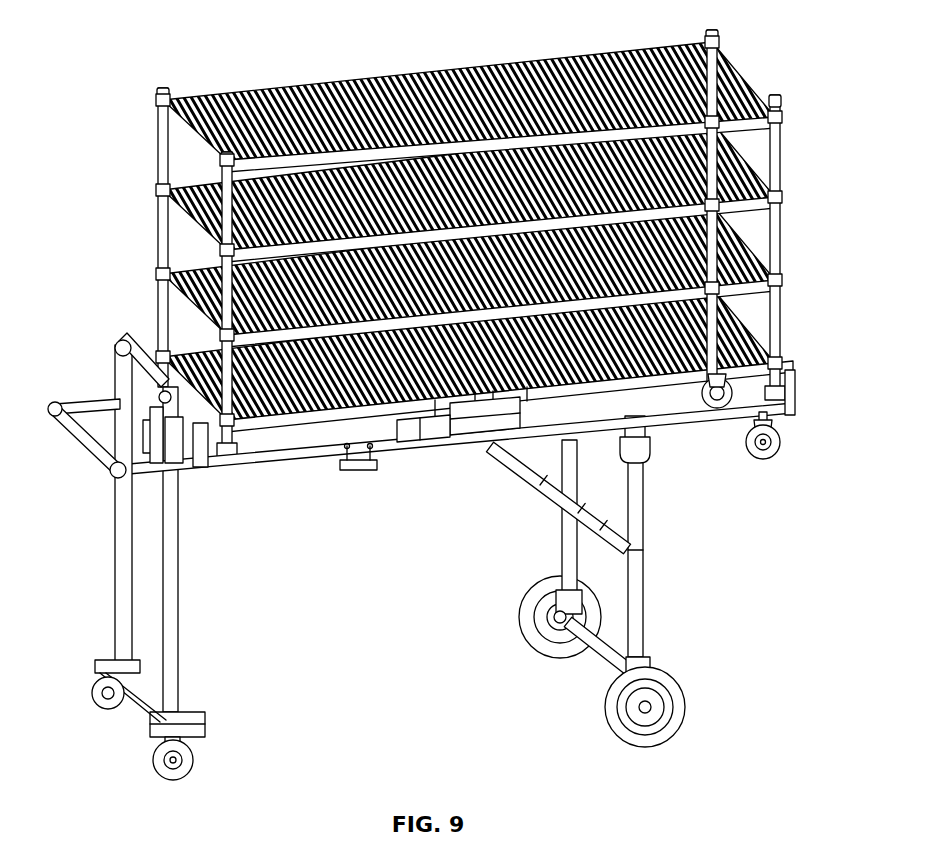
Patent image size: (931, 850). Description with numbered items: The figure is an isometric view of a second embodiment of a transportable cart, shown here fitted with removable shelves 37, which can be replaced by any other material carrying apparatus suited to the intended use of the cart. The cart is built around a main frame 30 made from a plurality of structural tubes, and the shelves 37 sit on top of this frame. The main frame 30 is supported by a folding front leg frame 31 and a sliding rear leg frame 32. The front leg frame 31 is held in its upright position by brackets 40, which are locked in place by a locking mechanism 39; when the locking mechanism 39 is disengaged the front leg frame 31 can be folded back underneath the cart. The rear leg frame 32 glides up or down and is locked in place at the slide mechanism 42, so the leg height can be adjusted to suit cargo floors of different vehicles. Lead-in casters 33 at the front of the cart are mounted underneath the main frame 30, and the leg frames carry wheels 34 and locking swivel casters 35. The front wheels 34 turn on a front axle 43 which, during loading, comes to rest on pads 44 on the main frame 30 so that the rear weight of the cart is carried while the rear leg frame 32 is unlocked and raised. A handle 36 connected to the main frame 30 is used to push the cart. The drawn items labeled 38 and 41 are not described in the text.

The main frame 30 is at (695, 415).
The front leg frame 31 is at (637, 604).
The rear leg frame 32 is at (172, 608).
The lead-in casters 33 is at (775, 452).
The wheels 34 is at (672, 708).
The locking swivel casters 35 is at (168, 765).
The handle 36 is at (88, 448).
The shelves 37 is at (778, 240).
The mounting block 38 is at (450, 432).
The locking mechanism 39 is at (405, 445).
The brackets 40 is at (545, 485).
The leg bracket 41 is at (638, 452).
The slide mechanism 42 is at (127, 380).
The front axle 43 is at (590, 652).
The pads 44 is at (350, 462).